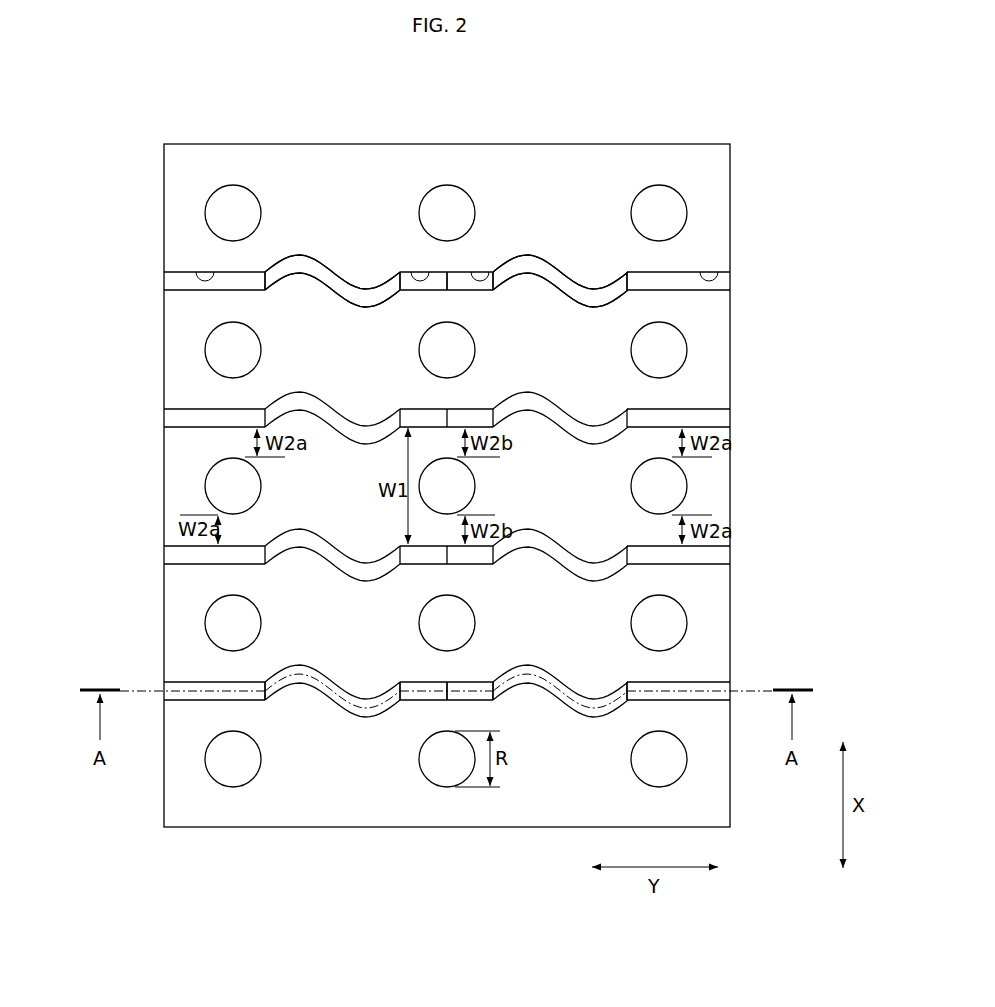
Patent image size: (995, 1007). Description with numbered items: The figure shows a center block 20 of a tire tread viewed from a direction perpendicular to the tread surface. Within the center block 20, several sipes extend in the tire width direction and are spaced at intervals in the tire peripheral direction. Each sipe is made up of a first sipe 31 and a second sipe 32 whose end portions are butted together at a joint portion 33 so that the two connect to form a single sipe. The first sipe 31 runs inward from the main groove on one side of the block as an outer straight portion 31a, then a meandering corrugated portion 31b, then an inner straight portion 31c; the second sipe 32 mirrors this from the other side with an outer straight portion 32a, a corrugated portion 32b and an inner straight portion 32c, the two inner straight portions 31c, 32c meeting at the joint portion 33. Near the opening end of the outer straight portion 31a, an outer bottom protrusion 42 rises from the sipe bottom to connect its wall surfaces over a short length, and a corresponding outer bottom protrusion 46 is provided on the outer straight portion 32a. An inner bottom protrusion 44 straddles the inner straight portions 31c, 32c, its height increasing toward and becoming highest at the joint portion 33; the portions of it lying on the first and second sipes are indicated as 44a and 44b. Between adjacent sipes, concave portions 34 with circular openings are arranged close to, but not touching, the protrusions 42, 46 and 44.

The center block 20 is at (330, 160).
The first sipe 31 is at (160, 282).
The second sipe 32 is at (734, 282).
The outer straight portion 31a is at (195, 278).
The corrugated portion 31b is at (335, 280).
The inner straight portion 31c is at (415, 278).
The outer straight portion 32a is at (710, 272).
The corrugated portion 32b is at (560, 278).
The inner straight portion 32c is at (483, 275).
The joint portion 33 is at (465, 285).
The concave portion 34 is at (233, 194).
The outer bottom protrusion 42 is at (255, 285).
The inner bottom protrusion 44 is at (420, 683).
The first inner boundary 44a is at (428, 284).
The second inner boundary 44b is at (492, 285).
The outer bottom protrusion 46 is at (648, 283).